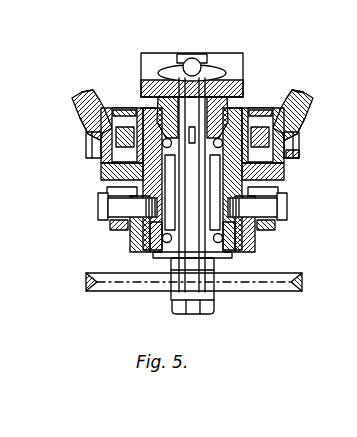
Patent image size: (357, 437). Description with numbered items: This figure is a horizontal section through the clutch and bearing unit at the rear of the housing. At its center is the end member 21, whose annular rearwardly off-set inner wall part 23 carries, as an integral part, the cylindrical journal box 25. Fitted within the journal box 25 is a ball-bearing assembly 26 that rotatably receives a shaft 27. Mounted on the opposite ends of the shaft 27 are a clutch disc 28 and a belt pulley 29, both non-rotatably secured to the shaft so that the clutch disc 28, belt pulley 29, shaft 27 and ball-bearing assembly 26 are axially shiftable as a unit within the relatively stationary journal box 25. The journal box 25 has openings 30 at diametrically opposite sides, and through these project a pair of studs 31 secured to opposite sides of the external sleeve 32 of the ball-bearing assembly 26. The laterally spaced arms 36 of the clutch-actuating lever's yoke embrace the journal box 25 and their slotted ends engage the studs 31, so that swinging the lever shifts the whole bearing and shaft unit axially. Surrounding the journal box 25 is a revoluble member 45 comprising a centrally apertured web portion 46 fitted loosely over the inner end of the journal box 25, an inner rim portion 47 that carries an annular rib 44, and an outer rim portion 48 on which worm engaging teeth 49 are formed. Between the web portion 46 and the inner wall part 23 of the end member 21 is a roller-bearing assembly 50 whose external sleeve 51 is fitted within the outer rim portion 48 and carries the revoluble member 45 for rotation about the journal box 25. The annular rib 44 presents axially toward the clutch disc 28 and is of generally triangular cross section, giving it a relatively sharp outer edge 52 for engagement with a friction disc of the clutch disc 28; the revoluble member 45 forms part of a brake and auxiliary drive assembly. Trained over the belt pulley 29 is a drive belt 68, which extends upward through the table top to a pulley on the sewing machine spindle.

The end member 21 is at (113, 182).
The inner wall part 23 is at (102, 172).
The journal box 25 is at (142, 234).
The ball-bearing assembly 26 is at (163, 258).
The shaft 27 is at (201, 305).
The clutch disc 28 is at (237, 69).
The belt pulley 29 is at (112, 292).
The openings 30 is at (137, 228).
The studs 31 is at (98, 212).
The external sleeve 32 is at (274, 190).
The arms 36 is at (110, 228).
The annular rib 44 is at (78, 98).
The revoluble member 45 is at (118, 107).
The web portion 46 is at (262, 106).
The inner rim portion 47 is at (83, 117).
The outer rim portion 48 is at (100, 158).
The worm engaging teeth 49 is at (87, 143).
The roller-bearing assembly 50 is at (305, 96).
The external sleeve 51 is at (299, 155).
The outer edge 52 is at (88, 93).
The drive belt 68 is at (301, 288).